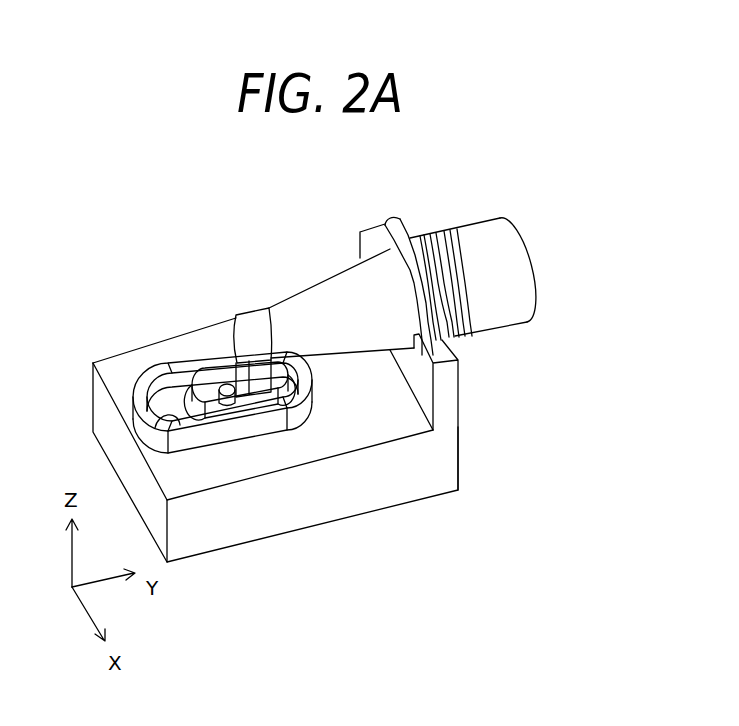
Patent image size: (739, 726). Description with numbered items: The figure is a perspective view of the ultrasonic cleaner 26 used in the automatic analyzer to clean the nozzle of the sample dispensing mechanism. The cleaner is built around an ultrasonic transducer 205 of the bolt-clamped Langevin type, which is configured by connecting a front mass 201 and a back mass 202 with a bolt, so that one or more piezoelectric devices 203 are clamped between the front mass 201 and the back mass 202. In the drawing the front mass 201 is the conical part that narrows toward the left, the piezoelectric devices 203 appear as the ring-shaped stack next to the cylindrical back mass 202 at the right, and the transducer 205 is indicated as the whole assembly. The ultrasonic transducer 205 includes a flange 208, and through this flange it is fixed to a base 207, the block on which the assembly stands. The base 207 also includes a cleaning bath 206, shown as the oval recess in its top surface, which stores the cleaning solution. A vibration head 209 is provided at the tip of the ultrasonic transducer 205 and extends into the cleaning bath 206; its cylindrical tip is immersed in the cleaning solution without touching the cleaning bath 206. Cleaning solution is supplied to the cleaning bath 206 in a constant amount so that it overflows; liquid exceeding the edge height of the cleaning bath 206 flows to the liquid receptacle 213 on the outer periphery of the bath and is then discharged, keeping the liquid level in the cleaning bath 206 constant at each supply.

The ultrasonic cleaner 26 is at (72, 175).
The front mass 201 is at (317, 342).
The back mass 202 is at (502, 312).
The piezoelectric devices 203 is at (455, 340).
The ultrasonic transducer 205 is at (622, 408).
The cleaning bath 206 is at (230, 377).
The base 207 is at (302, 508).
The flange 208 is at (400, 219).
The vibration head 209 is at (237, 323).
The liquid receptacle 213 is at (180, 424).